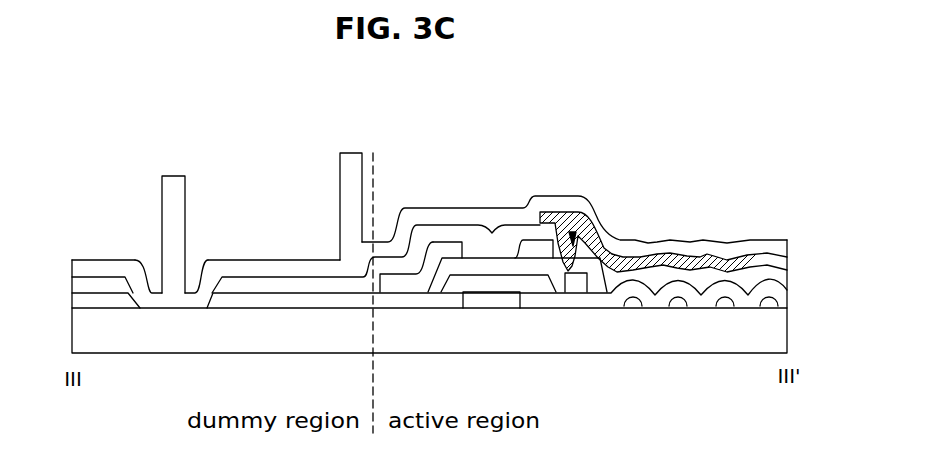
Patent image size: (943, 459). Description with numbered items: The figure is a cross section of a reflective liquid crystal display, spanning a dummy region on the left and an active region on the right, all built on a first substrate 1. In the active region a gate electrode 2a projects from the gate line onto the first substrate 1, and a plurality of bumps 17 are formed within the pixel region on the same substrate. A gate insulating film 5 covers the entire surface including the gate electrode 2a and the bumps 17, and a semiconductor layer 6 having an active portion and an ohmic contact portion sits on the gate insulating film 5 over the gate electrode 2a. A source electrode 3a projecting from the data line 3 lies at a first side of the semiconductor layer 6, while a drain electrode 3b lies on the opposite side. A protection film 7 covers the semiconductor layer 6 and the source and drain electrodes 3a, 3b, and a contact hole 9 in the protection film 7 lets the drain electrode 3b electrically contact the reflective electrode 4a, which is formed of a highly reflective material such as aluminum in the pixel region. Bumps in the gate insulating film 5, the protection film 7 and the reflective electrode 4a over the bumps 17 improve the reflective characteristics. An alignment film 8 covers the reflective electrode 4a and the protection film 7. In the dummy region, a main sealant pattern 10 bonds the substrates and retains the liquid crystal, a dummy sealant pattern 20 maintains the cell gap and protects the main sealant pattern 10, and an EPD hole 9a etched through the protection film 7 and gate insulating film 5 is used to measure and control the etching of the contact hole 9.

The first substrate 1 is at (289, 336).
The gate electrode 2a is at (481, 298).
The data line 3 is at (407, 283).
The source electrode 3a is at (452, 250).
The drain electrode 3b is at (570, 283).
The reflective electrode 4a is at (718, 255).
The gate insulating film 5 is at (787, 297).
The semiconductor layer 6 is at (442, 277).
The protection film 7 is at (787, 277).
The alignment film 8 is at (563, 203).
The contact hole 9 is at (590, 222).
The EPD hole 9a is at (191, 280).
The main sealant pattern 10 is at (347, 174).
The bumps 17 is at (725, 307).
The dummy sealant pattern 20 is at (167, 201).